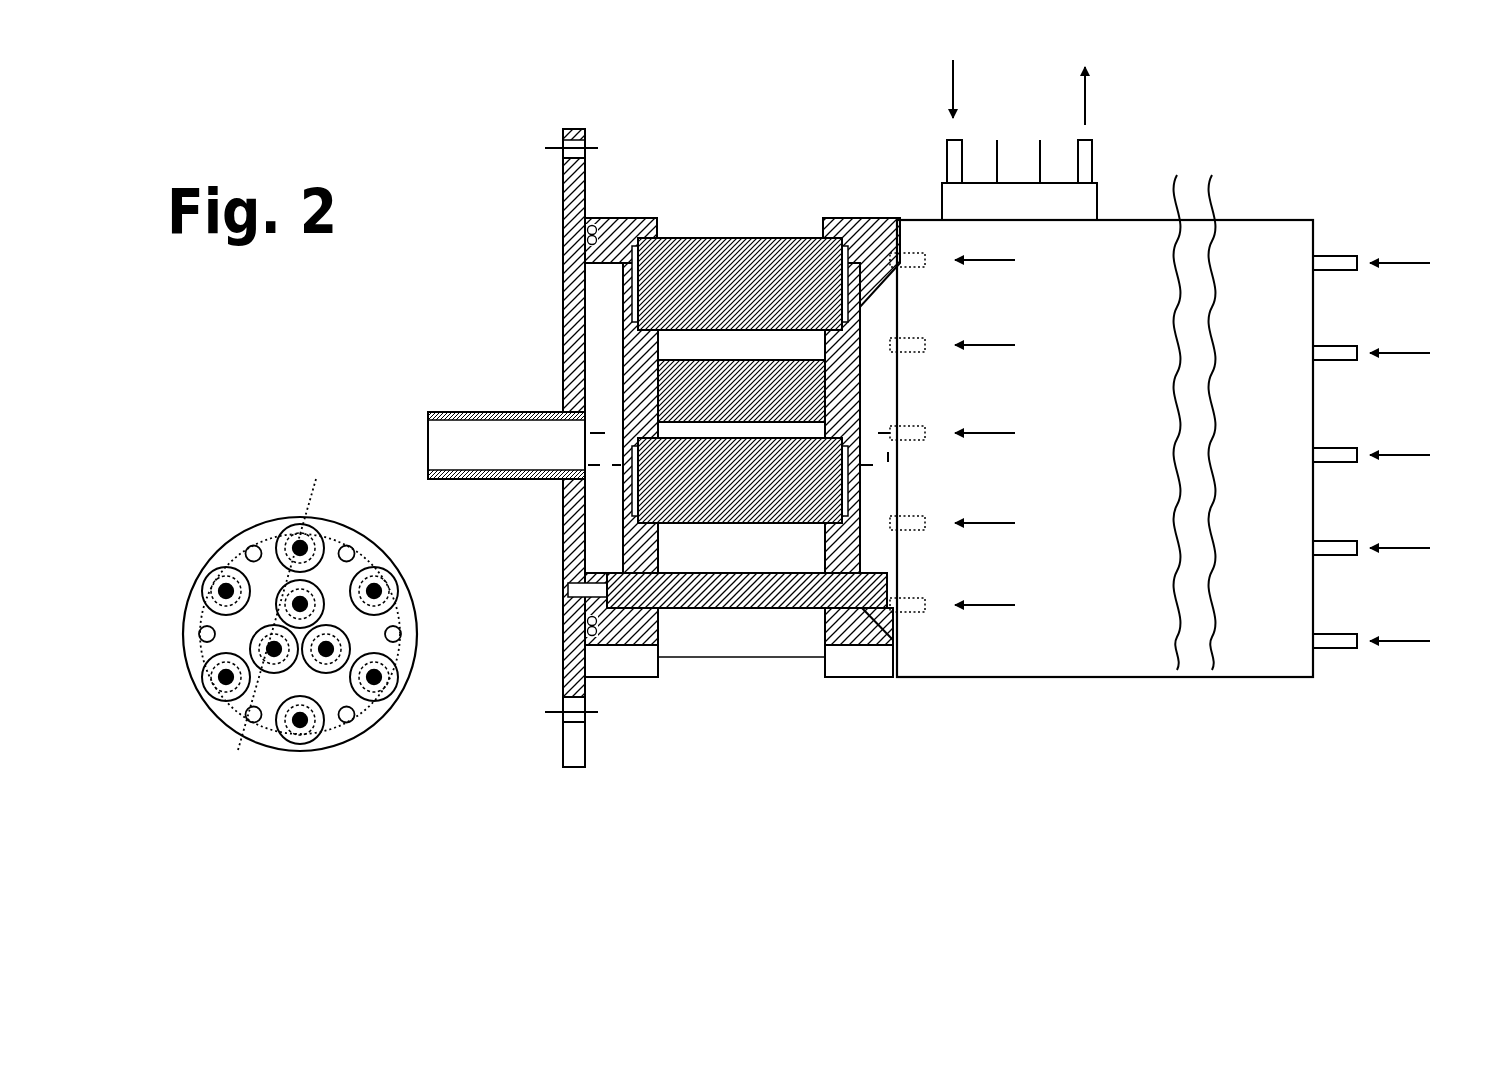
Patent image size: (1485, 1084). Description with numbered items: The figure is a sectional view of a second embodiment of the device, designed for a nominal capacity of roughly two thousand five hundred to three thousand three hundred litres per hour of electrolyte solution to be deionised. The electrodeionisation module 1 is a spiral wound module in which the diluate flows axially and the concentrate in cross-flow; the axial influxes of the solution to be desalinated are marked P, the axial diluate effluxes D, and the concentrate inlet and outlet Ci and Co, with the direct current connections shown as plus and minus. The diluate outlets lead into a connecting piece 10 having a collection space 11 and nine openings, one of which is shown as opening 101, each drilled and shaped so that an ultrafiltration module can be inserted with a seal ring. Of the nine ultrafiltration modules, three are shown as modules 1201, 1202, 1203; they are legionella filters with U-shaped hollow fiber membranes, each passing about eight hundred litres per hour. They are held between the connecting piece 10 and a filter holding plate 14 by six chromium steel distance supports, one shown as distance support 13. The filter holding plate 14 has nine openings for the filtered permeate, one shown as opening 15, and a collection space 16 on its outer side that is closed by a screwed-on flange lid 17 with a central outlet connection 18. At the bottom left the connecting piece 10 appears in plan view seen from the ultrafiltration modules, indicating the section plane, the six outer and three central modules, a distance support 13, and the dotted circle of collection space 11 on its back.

The electrodeionisation module 1 is at (1272, 258).
The connecting piece 10 is at (868, 217).
The collection space 11 is at (880, 393).
The distance support 13 is at (722, 610).
The filter holding plate 14 is at (650, 543).
The opening for filtered permeate 15 is at (612, 283).
The collection space 16 is at (595, 513).
The flange lid 17 is at (563, 290).
The central outlet connection 18 is at (535, 445).
The opening for the diluate 101 is at (860, 290).
The ultrafiltration module 1201 is at (707, 237).
The ultrafiltration module 1202 is at (777, 382).
The ultrafiltration module 1203 is at (787, 505).